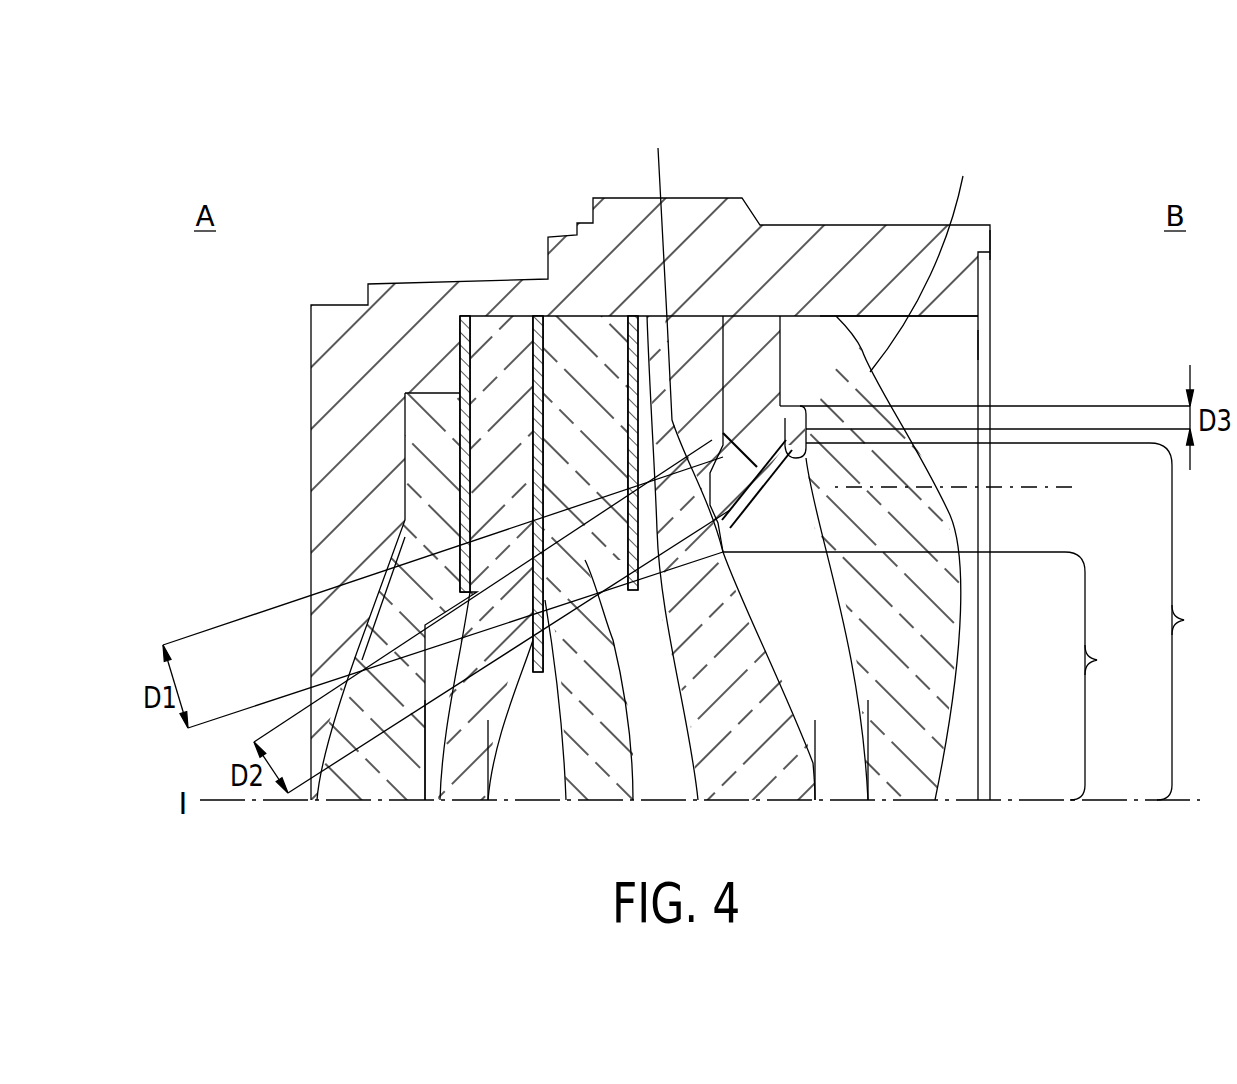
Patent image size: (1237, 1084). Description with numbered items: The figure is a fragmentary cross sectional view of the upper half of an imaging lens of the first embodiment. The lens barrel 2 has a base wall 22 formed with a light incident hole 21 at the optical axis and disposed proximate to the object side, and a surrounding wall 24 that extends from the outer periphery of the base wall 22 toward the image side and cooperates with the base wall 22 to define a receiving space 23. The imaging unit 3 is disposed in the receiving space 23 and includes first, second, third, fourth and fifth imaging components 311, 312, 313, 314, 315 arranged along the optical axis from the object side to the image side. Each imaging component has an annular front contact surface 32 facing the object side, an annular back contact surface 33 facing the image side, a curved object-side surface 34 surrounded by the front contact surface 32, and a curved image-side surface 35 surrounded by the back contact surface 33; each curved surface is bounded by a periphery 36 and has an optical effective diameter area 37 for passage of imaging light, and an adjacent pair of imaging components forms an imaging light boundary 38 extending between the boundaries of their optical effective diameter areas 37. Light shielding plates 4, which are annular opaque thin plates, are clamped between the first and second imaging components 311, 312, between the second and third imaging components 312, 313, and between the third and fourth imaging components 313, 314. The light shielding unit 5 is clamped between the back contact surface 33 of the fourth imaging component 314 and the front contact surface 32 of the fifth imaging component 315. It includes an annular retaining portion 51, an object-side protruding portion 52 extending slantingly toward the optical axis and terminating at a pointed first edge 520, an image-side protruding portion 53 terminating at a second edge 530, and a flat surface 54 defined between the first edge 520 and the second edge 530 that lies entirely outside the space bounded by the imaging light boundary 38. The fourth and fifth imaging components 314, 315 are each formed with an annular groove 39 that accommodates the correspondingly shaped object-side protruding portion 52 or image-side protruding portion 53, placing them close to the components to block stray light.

The lens barrel 2 is at (653, 437).
The light incident hole 21 is at (317, 663).
The base wall 22 is at (320, 378).
The receiving space 23 is at (978, 342).
The surrounding wall 24 is at (990, 240).
The imaging unit 3 is at (659, 612).
The first imaging component 311 is at (362, 790).
The second imaging component 312 is at (467, 790).
The third imaging component 313 is at (606, 792).
The fourth imaging component 314 is at (767, 787).
The fifth imaging component 315 is at (905, 800).
The annular front contact surface 32 is at (480, 367).
The annular back contact surface 33 is at (470, 385).
The curved object-side surface 34 is at (408, 777).
The curved image-side surface 35 is at (495, 745).
The periphery 36 is at (650, 335).
The optical effective diameter area 37 is at (978, 621).
The imaging light boundary 38 is at (965, 487).
The annular groove 39 is at (811, 335).
The light shielding plate 4 is at (445, 345).
The light shielding unit 5 is at (932, 329).
The annular retaining portion 51 is at (755, 340).
The object-side protruding portion 52 is at (705, 345).
The image-side protruding portion 53 is at (806, 460).
The surface 54 is at (777, 380).
The first edge 520 is at (812, 502).
The second edge 530 is at (812, 404).